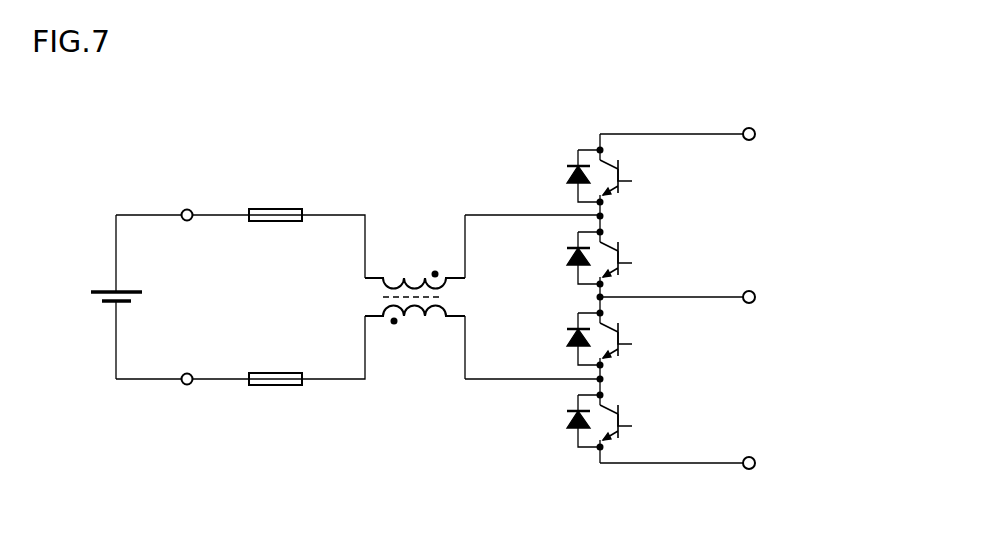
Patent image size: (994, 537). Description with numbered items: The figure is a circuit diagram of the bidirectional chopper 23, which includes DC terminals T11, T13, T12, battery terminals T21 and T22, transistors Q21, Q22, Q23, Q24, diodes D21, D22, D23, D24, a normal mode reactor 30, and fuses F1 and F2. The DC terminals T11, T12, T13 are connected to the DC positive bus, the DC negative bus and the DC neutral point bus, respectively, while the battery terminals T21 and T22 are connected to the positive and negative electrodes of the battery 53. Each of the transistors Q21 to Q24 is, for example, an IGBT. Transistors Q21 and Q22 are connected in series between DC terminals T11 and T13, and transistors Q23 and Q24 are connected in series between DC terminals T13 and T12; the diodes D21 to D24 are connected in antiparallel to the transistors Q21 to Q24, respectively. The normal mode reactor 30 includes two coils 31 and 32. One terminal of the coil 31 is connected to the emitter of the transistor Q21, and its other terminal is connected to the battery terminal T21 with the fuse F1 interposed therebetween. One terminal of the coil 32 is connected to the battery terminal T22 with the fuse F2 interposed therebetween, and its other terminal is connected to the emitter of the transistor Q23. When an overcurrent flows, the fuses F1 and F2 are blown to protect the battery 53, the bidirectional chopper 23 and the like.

The bidirectional chopper 23 is at (143, 108).
The battery 53 is at (105, 290).
The battery terminal T21 is at (187, 209).
The battery terminal T22 is at (188, 385).
The fuse F1 is at (275, 207).
The fuse F2 is at (275, 385).
The normal mode reactor 30 is at (310, 268).
The coil 31 is at (386, 288).
The coil 32 is at (386, 308).
The DC terminal T11 is at (752, 128).
The DC terminal T13 is at (752, 291).
The DC terminal T12 is at (752, 457).
The transistor Q21 is at (633, 179).
The transistor Q22 is at (633, 261).
The transistor Q23 is at (633, 342).
The transistor Q24 is at (633, 424).
The diode D21 is at (566, 180).
The diode D22 is at (566, 262).
The diode D23 is at (566, 343).
The diode D24 is at (566, 425).